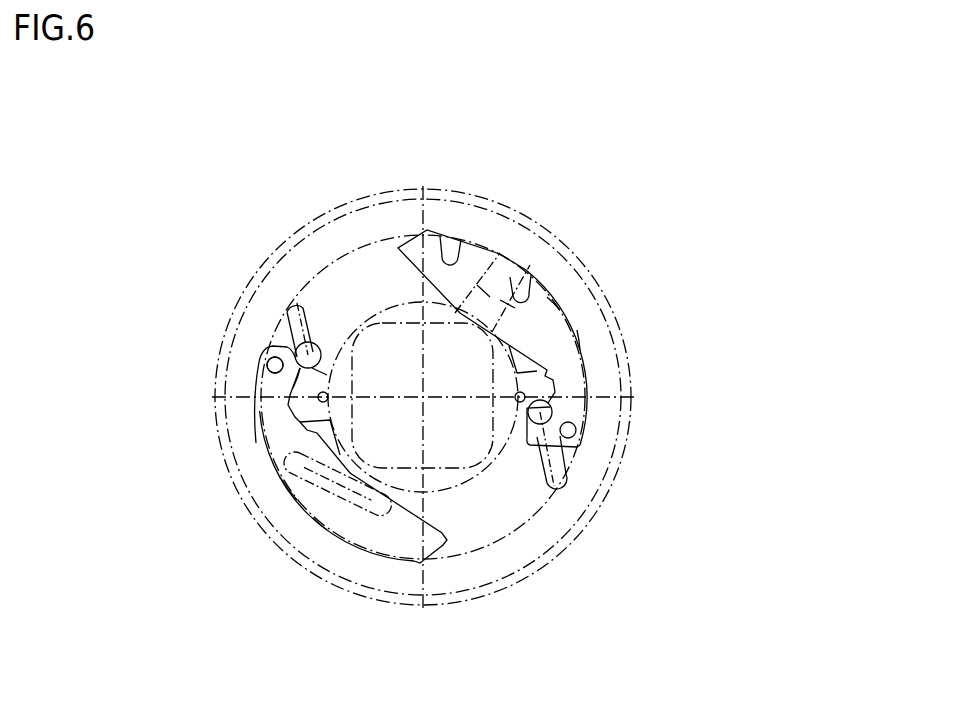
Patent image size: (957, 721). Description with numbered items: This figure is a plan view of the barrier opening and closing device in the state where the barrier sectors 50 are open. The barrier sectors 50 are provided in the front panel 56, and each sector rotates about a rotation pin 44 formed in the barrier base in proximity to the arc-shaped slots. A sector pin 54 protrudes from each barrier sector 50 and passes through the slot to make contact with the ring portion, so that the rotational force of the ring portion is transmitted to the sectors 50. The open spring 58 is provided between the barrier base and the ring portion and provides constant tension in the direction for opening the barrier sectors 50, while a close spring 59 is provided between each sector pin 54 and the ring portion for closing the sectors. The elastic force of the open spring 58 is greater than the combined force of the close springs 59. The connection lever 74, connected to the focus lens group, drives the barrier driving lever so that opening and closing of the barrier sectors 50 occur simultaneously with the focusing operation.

The rotation pin 44 is at (267, 362).
The barrier sector 50 is at (263, 447).
The sector pin 54 is at (293, 388).
The front panel 56 is at (515, 585).
The open spring 58 is at (347, 503).
The close spring 59 is at (285, 330).
The connection lever 74 is at (503, 258).